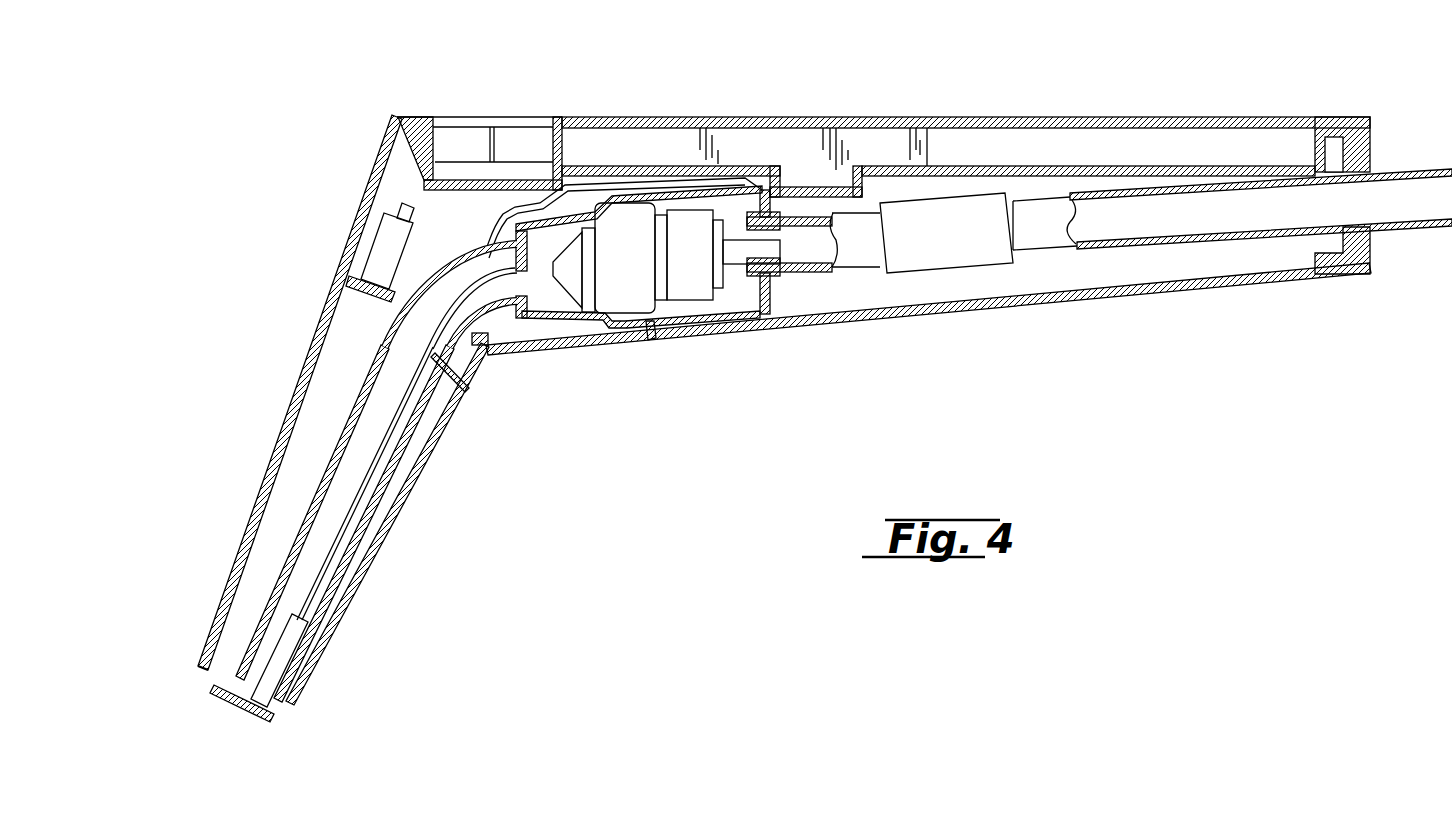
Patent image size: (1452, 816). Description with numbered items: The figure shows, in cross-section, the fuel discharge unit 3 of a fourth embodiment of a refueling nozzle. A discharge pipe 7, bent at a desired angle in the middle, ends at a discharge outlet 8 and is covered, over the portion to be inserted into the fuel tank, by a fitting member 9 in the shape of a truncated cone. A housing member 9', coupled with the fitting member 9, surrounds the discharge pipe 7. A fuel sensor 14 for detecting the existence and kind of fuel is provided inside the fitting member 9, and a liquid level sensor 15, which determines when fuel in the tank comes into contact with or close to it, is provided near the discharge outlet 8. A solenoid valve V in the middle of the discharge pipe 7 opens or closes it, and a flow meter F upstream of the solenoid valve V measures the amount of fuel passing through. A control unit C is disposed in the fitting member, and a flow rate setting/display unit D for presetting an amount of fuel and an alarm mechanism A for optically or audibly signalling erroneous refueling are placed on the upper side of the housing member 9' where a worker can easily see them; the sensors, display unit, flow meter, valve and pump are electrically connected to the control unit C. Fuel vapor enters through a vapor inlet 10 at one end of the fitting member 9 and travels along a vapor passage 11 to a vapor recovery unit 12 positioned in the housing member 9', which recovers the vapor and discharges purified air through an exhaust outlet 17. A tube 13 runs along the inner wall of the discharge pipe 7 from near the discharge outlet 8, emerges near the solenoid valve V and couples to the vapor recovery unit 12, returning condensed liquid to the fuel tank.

The fuel discharge unit 3 is at (508, 433).
The discharge pipe 7 is at (350, 400).
The discharge outlet 8 is at (240, 703).
The fitting member 9 is at (387, 524).
The housing member 9' is at (921, 192).
The vapor inlet 10 is at (207, 672).
The vapor passage 11 is at (345, 355).
The vapor recovery unit 12 is at (805, 150).
The tube 13 is at (328, 490).
The fuel sensor 14 is at (390, 235).
The liquid level sensor 15 is at (272, 660).
The exhaust outlet 17 is at (1292, 115).
The alarm mechanism A is at (452, 127).
The control unit C is at (470, 168).
The flow rate setting/display unit D is at (540, 127).
The solenoid valve V is at (648, 300).
The flow meter F is at (950, 255).